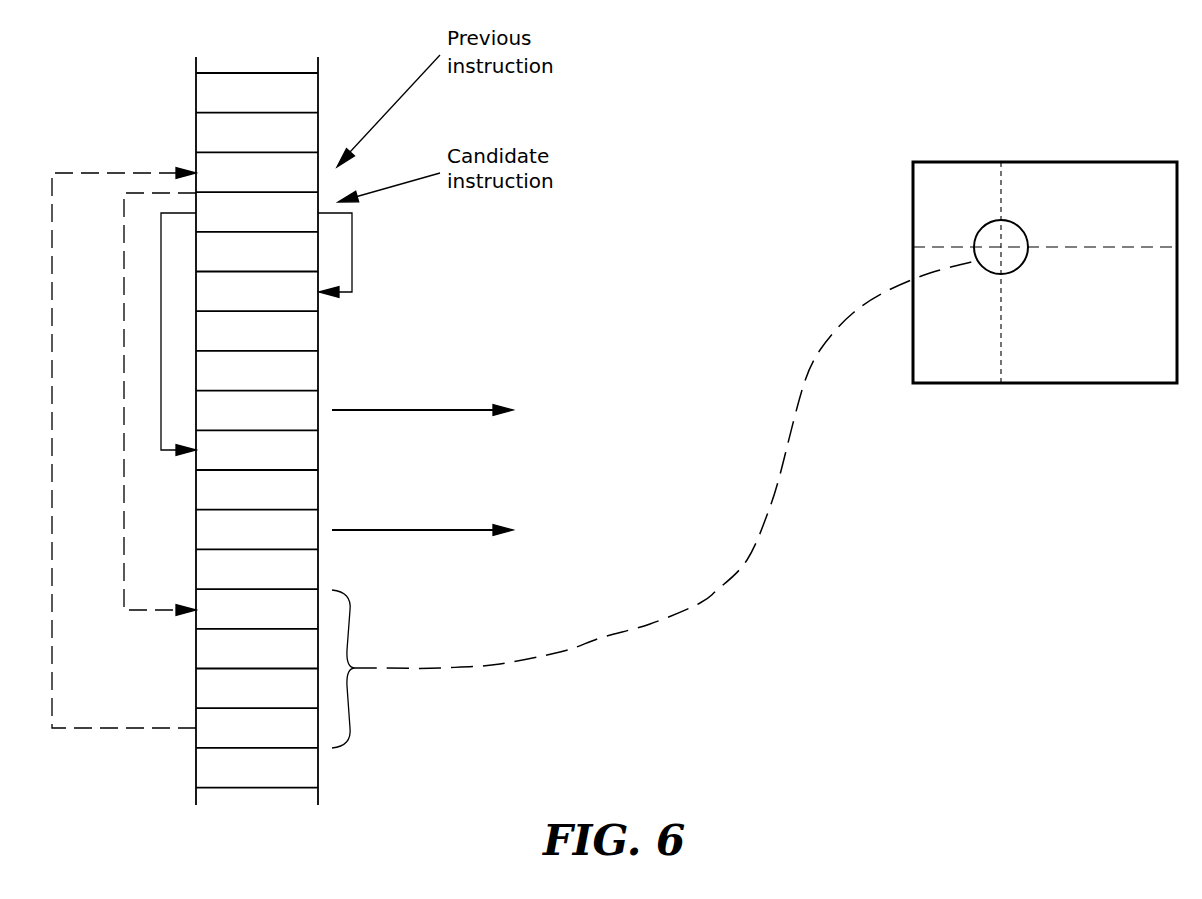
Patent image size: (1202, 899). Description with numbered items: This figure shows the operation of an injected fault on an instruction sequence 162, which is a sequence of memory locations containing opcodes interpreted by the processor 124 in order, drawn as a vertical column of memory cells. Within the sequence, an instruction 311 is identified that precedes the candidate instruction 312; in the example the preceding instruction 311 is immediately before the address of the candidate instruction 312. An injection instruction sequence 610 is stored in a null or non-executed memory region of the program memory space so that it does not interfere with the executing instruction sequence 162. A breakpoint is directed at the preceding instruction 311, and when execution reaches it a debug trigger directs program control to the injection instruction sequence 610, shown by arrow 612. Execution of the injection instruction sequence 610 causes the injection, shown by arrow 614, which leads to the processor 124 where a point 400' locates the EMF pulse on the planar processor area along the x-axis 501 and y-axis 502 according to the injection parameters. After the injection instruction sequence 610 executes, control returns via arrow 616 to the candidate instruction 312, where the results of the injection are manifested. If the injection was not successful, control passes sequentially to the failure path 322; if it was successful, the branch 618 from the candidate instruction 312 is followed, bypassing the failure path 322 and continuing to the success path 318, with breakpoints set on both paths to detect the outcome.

The instruction sequence 162 is at (242, 822).
The preceding instruction 311 is at (277, 187).
The candidate instruction 312 is at (277, 227).
The success path 318 is at (455, 530).
The failure path 322 is at (455, 410).
The injection instruction sequence 610 is at (353, 608).
The arrow to injection instruction sequence 612 is at (148, 609).
The arrow indicating injection 614 is at (717, 590).
The arrow returning control 616 is at (122, 731).
The branch 618 is at (161, 433).
The point on cluster graph 400' is at (1037, 231).
The x-axis 501 is at (1001, 350).
The y-axis 502 is at (1092, 247).
The processor 124 is at (1102, 383).